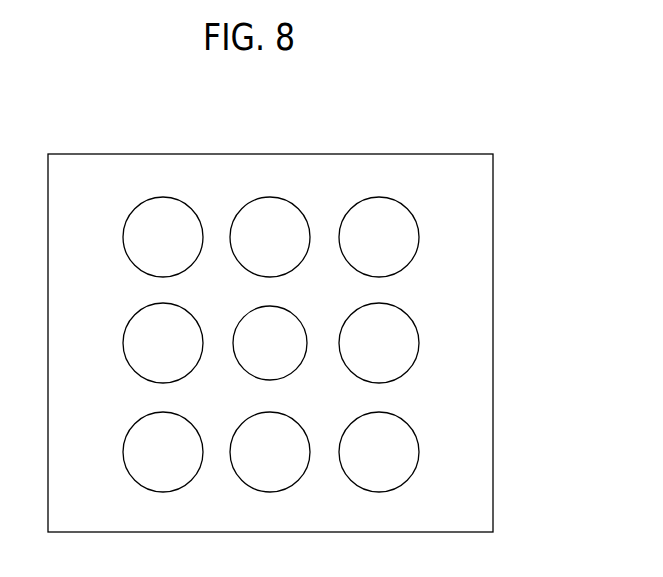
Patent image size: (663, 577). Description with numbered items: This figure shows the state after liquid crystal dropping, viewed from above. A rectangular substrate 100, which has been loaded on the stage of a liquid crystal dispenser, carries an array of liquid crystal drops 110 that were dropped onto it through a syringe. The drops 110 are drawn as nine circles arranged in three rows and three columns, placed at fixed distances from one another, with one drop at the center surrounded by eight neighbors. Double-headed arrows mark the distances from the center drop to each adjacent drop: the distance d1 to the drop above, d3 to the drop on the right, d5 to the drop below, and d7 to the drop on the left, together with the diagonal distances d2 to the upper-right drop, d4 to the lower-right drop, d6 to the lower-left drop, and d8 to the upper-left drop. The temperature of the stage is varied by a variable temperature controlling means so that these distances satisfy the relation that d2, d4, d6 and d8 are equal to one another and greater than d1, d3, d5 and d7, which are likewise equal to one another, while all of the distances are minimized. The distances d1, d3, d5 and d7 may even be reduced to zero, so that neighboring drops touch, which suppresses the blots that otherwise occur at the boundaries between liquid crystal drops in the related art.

The substrate 100 is at (493, 346).
The liquid crystal drop 110 is at (271, 228).
The distance to adjacent liquid crystal drop d1 is at (270, 277).
The distance to adjacent liquid crystal drop d2 is at (350, 265).
The distance to adjacent liquid crystal drop d3 is at (339, 343).
The distance to adjacent liquid crystal drop d4 is at (296, 369).
The distance to adjacent liquid crystal drop d5 is at (270, 380).
The distance to adjacent liquid crystal drop d6 is at (244, 369).
The distance to adjacent liquid crystal drop d7 is at (233, 343).
The distance to adjacent liquid crystal drop d8 is at (244, 317).